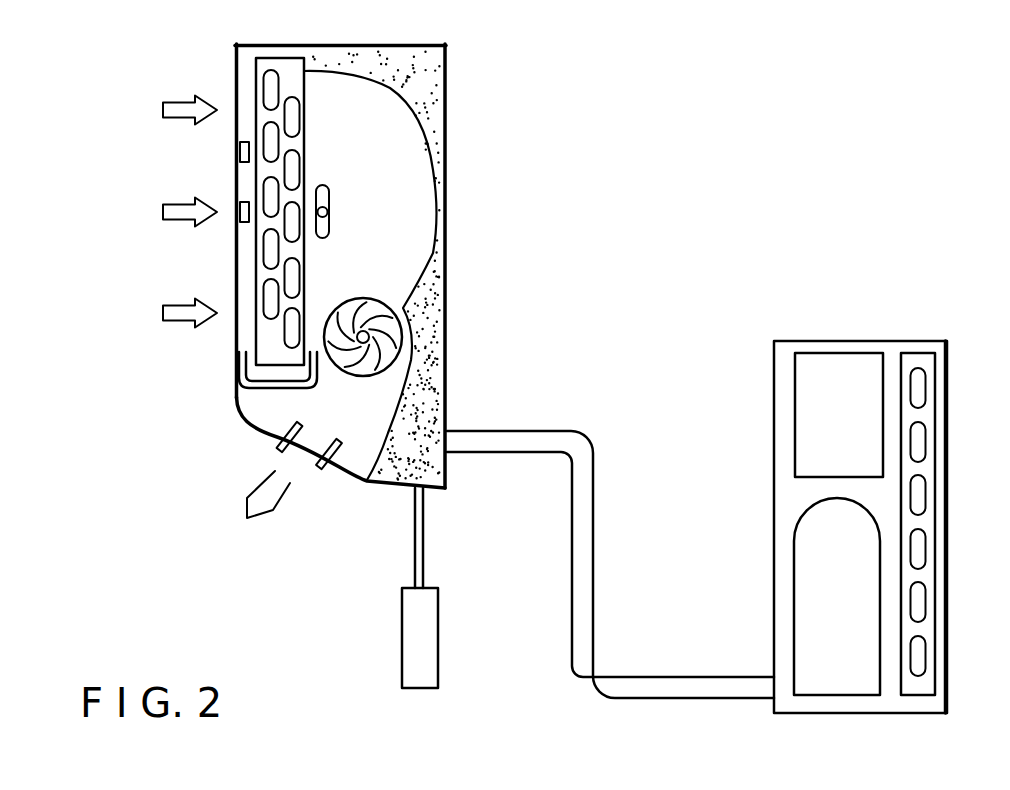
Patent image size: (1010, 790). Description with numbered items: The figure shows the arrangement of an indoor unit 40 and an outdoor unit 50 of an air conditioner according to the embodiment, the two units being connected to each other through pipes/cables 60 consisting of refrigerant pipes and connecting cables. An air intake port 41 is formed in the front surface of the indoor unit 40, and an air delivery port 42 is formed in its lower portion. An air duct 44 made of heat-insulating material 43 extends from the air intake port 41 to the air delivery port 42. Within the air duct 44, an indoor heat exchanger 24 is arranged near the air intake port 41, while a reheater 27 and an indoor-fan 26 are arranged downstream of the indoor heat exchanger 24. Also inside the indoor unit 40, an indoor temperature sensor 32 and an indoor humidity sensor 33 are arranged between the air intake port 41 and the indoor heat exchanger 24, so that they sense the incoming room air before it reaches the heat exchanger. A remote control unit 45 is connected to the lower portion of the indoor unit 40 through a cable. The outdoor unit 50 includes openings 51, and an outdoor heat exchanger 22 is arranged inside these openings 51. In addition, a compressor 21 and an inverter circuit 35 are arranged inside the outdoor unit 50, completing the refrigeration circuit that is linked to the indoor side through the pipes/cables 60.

The compressor 21 is at (838, 697).
The outdoor heat exchanger 22 is at (936, 478).
The indoor heat exchanger 24 is at (276, 60).
The indoor-fan 26 is at (368, 298).
The reheater 27 is at (331, 200).
The indoor temperature sensor 32 is at (240, 152).
The indoor humidity sensor 33 is at (237, 212).
The inverter circuit 35 is at (795, 406).
The indoor unit 40 is at (372, 45).
The air intake port 41 is at (235, 60).
The air delivery port 42 is at (258, 432).
The heat-insulating material 43 is at (424, 88).
The air duct 44 is at (397, 144).
The remote control unit 45 is at (401, 645).
The outdoor unit 50 is at (852, 340).
The openings 51 is at (948, 405).
The pipes/cables 60 is at (595, 516).